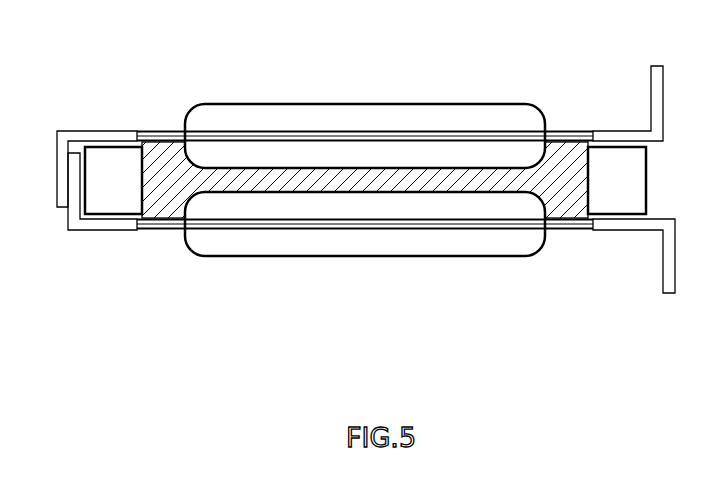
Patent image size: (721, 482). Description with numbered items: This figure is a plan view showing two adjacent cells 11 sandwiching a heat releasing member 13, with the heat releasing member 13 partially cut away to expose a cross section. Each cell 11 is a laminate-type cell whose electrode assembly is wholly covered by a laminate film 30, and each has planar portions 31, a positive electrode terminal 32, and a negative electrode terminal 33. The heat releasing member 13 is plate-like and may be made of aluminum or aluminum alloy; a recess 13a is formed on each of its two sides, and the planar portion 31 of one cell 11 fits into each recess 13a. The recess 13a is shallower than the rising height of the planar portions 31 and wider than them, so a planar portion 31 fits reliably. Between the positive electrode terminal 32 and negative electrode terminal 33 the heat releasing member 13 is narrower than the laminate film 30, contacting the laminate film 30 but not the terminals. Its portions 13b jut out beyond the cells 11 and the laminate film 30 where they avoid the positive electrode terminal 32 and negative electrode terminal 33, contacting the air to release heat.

The cell 11 is at (365, 187).
The heat releasing member 13 is at (600, 192).
The recess 13a is at (277, 167).
The portions jutting out from the cells 13b is at (108, 147).
The laminate film 30 is at (166, 131).
The planar portion 31 is at (357, 104).
The positive electrode terminal 32 is at (77, 131).
The negative electrode terminal 33 is at (83, 230).